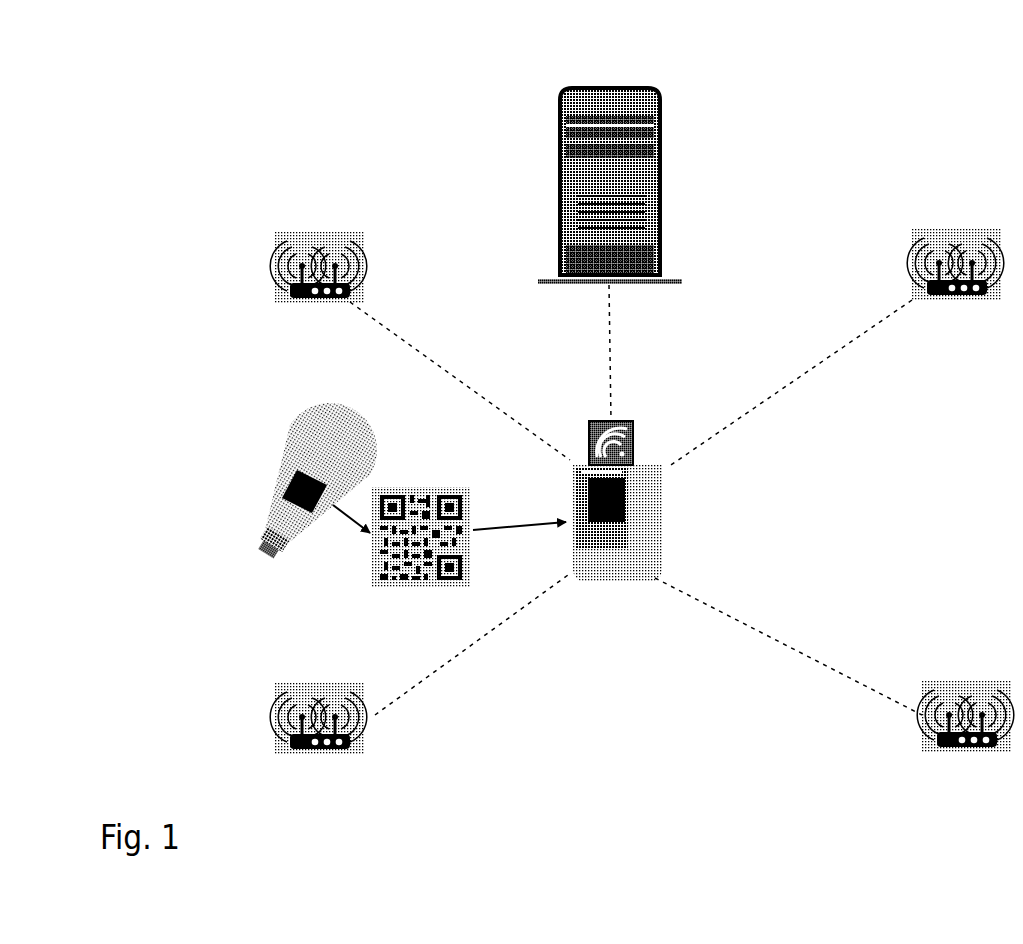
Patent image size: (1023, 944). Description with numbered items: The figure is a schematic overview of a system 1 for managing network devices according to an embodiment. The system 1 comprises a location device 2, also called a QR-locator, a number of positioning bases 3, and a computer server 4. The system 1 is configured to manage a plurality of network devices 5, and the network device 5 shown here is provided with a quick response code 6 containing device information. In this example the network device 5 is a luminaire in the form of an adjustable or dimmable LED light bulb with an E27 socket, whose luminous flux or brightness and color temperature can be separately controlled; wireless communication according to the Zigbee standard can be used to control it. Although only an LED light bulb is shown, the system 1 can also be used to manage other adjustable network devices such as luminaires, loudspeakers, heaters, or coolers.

The system 1 is at (266, 128).
The location device 2 is at (617, 525).
The positioning base 3 is at (642, 514).
The computer server 4 is at (610, 212).
The network device 5 is at (260, 436).
The quick response code 6 is at (383, 572).